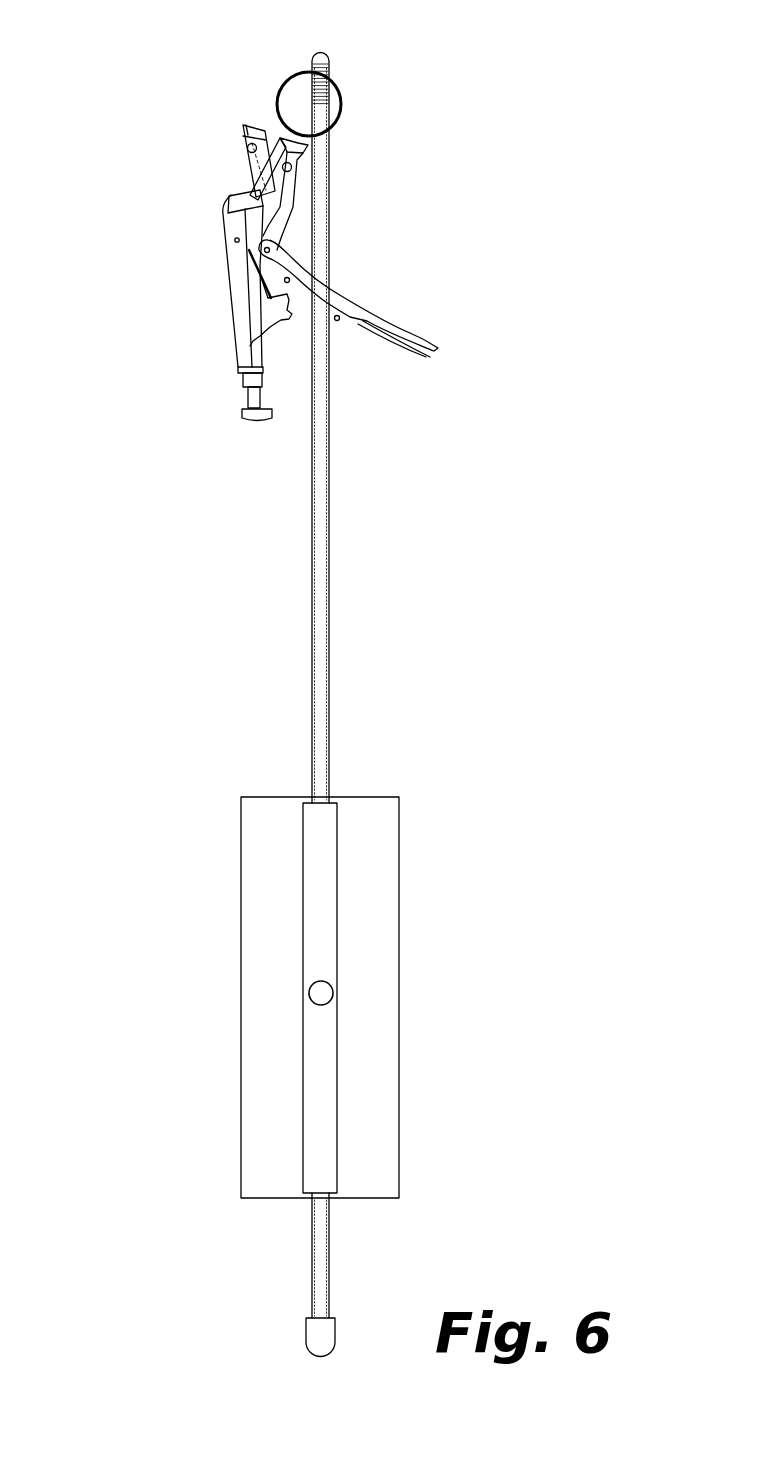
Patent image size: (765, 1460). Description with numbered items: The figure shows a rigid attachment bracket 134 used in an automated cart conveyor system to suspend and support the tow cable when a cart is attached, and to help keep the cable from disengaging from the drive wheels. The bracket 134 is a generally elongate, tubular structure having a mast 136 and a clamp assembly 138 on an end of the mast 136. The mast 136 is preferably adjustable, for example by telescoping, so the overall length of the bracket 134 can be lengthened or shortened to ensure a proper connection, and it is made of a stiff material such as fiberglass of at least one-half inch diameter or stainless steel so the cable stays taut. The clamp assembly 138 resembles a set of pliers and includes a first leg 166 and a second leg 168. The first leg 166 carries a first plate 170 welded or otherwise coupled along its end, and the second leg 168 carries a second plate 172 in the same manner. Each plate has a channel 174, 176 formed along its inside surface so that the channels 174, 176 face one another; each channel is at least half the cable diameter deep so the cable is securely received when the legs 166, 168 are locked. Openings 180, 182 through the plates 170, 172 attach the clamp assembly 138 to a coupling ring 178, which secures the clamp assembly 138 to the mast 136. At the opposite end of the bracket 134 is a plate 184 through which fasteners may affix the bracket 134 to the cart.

The attachment bracket 134 is at (68, 532).
The mast 136 is at (316, 584).
The clamp assembly 138 is at (220, 298).
The first leg 166 is at (350, 300).
The second leg 168 is at (226, 233).
The first plate 170 is at (298, 163).
The second plate 172 is at (248, 165).
The channel 174 is at (278, 132).
The channel 176 is at (262, 130).
The coupling ring 178 is at (281, 93).
The opening 180 is at (292, 171).
The opening 182 is at (247, 150).
The plate 184 is at (252, 880).